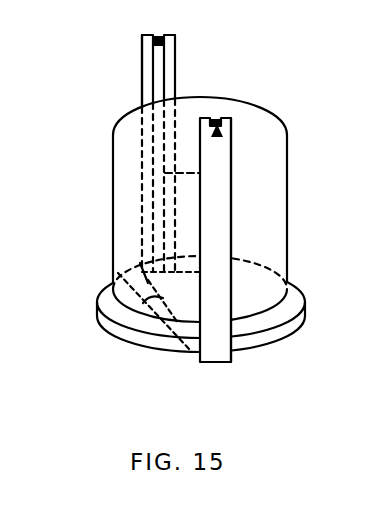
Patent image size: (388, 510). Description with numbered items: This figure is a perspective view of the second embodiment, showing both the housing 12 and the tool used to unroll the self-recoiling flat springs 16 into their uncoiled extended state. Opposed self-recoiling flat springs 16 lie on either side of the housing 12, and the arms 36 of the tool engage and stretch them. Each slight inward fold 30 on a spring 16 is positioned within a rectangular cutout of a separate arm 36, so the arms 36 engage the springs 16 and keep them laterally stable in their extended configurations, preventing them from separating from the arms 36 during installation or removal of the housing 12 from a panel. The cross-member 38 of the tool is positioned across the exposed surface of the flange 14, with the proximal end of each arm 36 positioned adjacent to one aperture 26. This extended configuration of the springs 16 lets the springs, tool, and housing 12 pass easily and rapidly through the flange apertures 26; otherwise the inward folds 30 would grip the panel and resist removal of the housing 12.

The housing 12 is at (255, 106).
The flange 14 is at (299, 312).
The self-recoiling flat springs 16 is at (157, 176).
The aperture 26 is at (134, 257).
The slight inward fold 30 is at (156, 32).
The arms 36 is at (143, 140).
The cross-member 38 is at (143, 308).